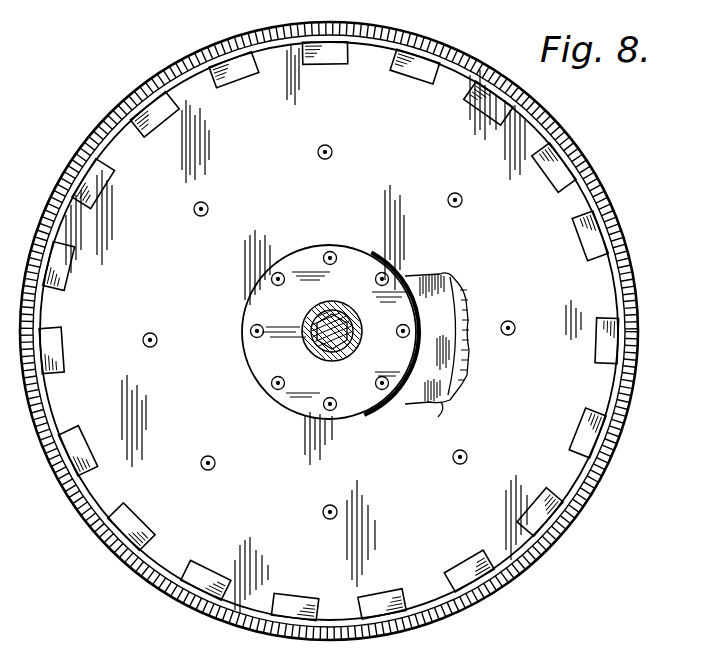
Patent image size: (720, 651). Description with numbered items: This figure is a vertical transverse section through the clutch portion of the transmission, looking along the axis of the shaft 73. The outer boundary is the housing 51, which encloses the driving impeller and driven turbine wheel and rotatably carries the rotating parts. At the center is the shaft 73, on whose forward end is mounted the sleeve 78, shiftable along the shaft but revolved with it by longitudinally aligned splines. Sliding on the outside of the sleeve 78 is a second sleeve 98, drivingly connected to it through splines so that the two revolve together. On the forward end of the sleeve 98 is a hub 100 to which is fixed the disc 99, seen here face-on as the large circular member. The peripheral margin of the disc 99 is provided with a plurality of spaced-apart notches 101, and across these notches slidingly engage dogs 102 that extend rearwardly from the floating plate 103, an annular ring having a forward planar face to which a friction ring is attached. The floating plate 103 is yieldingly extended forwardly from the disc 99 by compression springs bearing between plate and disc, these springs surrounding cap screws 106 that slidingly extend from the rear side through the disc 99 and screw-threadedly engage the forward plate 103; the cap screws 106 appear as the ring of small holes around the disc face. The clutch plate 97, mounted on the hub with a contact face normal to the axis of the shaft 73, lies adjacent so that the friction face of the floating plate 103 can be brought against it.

The housing 51 is at (575, 152).
The disc 99 is at (577, 293).
The notches 101 is at (592, 413).
The dogs 102 is at (617, 345).
The cap screws 106 is at (150, 347).
The clutch plate 97 is at (445, 358).
The floating plate 103 is at (429, 419).
The hub 100 is at (370, 414).
The second sleeve 98 is at (320, 320).
The sleeve 78 is at (337, 316).
The shaft 73 is at (331, 352).